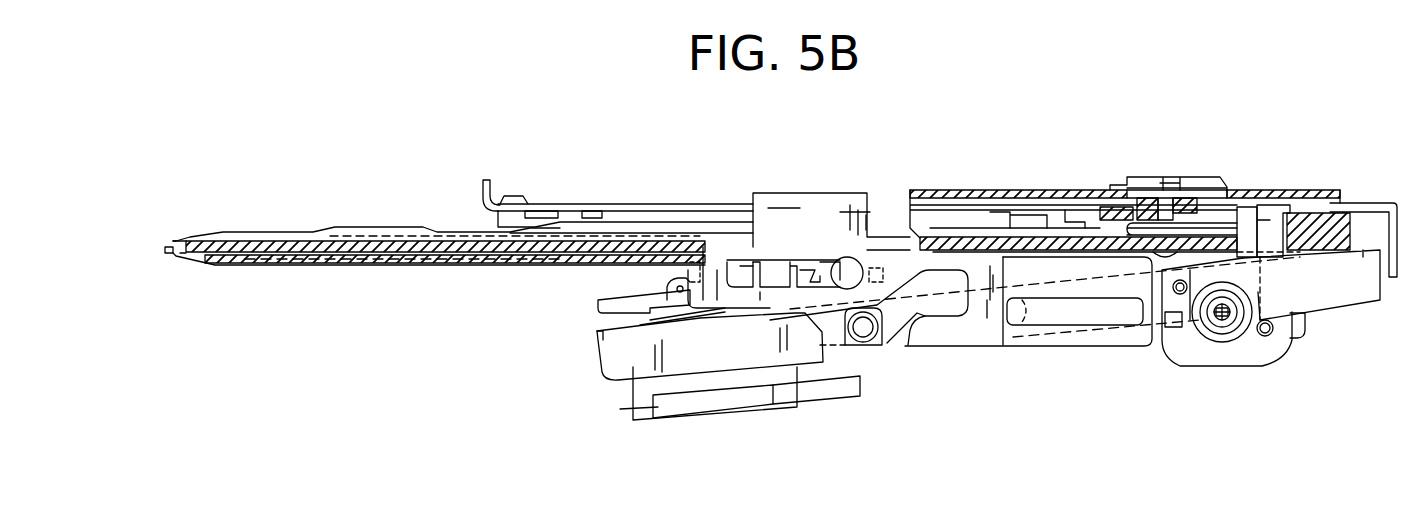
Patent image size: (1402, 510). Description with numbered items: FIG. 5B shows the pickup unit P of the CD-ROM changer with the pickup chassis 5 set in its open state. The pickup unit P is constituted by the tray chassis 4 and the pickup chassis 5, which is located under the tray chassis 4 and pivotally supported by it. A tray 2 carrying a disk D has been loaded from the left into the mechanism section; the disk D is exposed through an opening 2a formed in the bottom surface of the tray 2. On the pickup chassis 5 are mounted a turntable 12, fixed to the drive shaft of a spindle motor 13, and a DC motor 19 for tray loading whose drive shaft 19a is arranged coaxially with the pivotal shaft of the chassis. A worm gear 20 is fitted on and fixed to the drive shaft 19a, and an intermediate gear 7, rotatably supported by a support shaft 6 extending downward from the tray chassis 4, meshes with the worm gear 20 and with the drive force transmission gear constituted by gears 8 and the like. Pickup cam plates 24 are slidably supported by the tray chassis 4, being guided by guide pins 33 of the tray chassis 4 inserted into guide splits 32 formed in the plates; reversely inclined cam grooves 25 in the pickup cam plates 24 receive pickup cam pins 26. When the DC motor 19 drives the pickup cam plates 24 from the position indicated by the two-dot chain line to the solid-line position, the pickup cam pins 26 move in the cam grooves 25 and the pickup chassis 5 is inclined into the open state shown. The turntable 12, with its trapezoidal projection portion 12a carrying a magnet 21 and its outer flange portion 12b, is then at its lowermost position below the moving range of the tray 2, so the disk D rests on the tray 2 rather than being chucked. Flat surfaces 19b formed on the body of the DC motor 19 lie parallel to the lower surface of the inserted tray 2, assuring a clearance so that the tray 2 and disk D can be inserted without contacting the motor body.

The tray 2 is at (331, 268).
The opening 2a is at (1193, 243).
The tray chassis 4 is at (1368, 225).
The pickup chassis 5 is at (1345, 292).
The support shaft 6 is at (1275, 228).
The intermediate gear 7 is at (1303, 332).
The gear 8 is at (1116, 215).
The turntable 12 is at (733, 170).
The projection portion 12a is at (777, 270).
The flange portion 12b is at (600, 300).
The spindle motor 13 is at (598, 345).
The DC motor 19 is at (1158, 430).
The drive shaft 19a is at (1230, 330).
The flat surfaces 19b is at (1243, 253).
The worm gear 20 is at (1222, 325).
The magnet 21 is at (696, 282).
The pickup cam plates 24 is at (1127, 347).
The cam grooves 25 is at (913, 328).
The pickup cam pins 26 is at (865, 330).
The guide splits 32 is at (1068, 318).
The guide pins 33 is at (1024, 312).
The disk D is at (240, 240).
The pickup unit P is at (1352, 110).